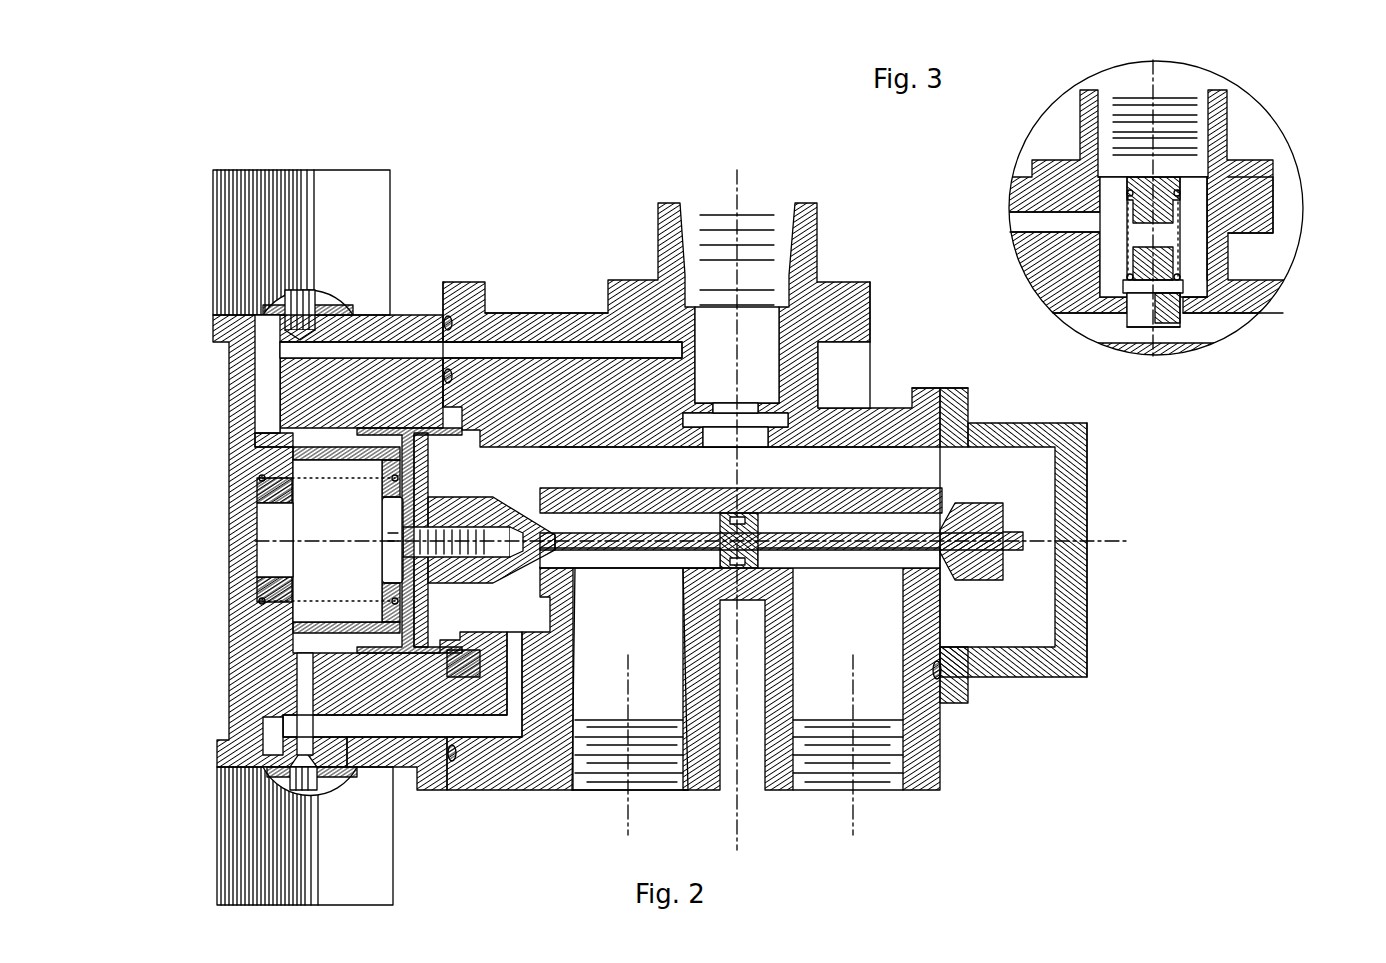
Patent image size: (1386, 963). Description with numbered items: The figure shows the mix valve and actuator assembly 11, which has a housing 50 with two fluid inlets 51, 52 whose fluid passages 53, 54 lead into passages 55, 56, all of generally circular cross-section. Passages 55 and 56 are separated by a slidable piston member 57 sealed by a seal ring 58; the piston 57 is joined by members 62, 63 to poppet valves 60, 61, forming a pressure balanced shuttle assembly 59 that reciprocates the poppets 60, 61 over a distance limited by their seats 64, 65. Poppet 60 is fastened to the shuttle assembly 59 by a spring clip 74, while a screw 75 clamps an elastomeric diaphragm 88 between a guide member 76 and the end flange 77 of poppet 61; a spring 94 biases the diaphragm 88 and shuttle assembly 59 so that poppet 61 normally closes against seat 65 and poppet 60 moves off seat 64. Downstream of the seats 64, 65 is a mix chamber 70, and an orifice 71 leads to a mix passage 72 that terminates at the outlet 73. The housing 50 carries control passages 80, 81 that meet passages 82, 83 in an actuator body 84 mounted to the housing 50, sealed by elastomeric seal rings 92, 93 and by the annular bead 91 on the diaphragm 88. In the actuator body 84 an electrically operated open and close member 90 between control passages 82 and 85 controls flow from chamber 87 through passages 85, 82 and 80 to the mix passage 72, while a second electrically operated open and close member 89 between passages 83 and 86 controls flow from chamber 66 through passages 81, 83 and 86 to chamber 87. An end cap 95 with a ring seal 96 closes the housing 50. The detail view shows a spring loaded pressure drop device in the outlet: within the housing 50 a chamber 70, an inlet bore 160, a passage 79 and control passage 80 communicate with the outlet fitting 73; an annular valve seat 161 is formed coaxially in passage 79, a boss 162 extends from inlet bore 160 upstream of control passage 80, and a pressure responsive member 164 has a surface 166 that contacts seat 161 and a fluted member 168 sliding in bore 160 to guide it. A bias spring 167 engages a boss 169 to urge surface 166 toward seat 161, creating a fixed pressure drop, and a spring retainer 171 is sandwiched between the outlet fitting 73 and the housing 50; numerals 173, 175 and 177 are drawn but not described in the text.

In FIG. 2, the mix valve and actuator assembly 11 is at (884, 338).
In FIG. 2, the housing 50 is at (512, 312).
In FIG. 3, the housing 50 is at (1273, 180).
In FIG. 2, the fluid inlet 51 is at (868, 792).
In FIG. 2, the fluid inlet 52 is at (652, 792).
In FIG. 2, the fluid passage 53 is at (868, 642).
In FIG. 2, the fluid passage 54 is at (644, 642).
In FIG. 2, the passage 55 is at (846, 520).
In FIG. 2, the passage 56 is at (597, 518).
In FIG. 2, the piston member 57 is at (785, 555).
In FIG. 2, the seal ring 58 is at (720, 515).
In FIG. 2, the shuttle assembly 59 is at (663, 556).
In FIG. 2, the poppet valve 60 is at (985, 503).
In FIG. 2, the poppet valve 61 is at (490, 500).
In FIG. 2, the member 62 is at (890, 562).
In FIG. 2, the member 63 is at (590, 556).
In FIG. 2, the seat 64 is at (948, 510).
In FIG. 2, the seat 65 is at (530, 570).
In FIG. 2, the chamber 66 is at (497, 629).
In FIG. 2, the mix chamber 70 is at (820, 479).
In FIG. 3, the mix chamber 70 is at (1140, 333).
In FIG. 2, the orifice 71 is at (760, 405).
In FIG. 2, the mix passage 72 is at (733, 347).
In FIG. 2, the outlet 73 is at (745, 205).
In FIG. 3, the outlet 73 is at (1180, 90).
In FIG. 2, the spring clip 74 is at (1003, 515).
In FIG. 2, the screw 75 is at (385, 520).
In FIG. 2, the guide member 76 is at (270, 605).
In FIG. 2, the end flange 77 is at (433, 625).
In FIG. 2, the passage 79 is at (845, 445).
In FIG. 3, the passage 79 is at (1270, 260).
In FIG. 2, the control passage 80 is at (540, 345).
In FIG. 3, the control passage 80 is at (1050, 222).
In FIG. 2, the control passage 81 is at (520, 757).
In FIG. 2, the control passage 82 is at (400, 350).
In FIG. 2, the control passage 83 is at (400, 740).
In FIG. 2, the actuator body 84 is at (229, 490).
In FIG. 2, the control passage 85 is at (268, 375).
In FIG. 2, the control passage 86 is at (300, 690).
In FIG. 2, the chamber 87 is at (357, 534).
In FIG. 2, the elastomeric diaphragm 88 is at (275, 440).
In FIG. 2, the electrically operated open and close member 89 is at (300, 775).
In FIG. 2, the electrically operated open and close member 90 is at (330, 300).
In FIG. 2, the annular bead 91 is at (470, 430).
In FIG. 2, the elastomeric seal ring 92 is at (452, 318).
In FIG. 2, the elastomeric seal ring 93 is at (455, 762).
In FIG. 2, the spring 94 is at (340, 600).
In FIG. 2, the end cap 95 is at (1087, 560).
In FIG. 2, the ring seal 96 is at (942, 668).
In FIG. 3, the inlet bore 160 is at (1130, 310).
In FIG. 3, the annular valve seat 161 is at (1200, 290).
In FIG. 3, the boss 162 is at (1190, 297).
In FIG. 3, the pressure responsive member 164 is at (1175, 262).
In FIG. 3, the surface 166 is at (1180, 320).
In FIG. 3, the bias spring 167 is at (1090, 285).
In FIG. 3, the fluted member 168 is at (1180, 340).
In FIG. 3, the boss 169 is at (1195, 232).
In FIG. 3, the spring retainer 171 is at (1140, 177).
In FIG. 3, the right bore 173 is at (1193, 173).
In FIG. 3, the left body block 175 is at (1060, 240).
In FIG. 3, the upper plug 177 is at (1195, 197).